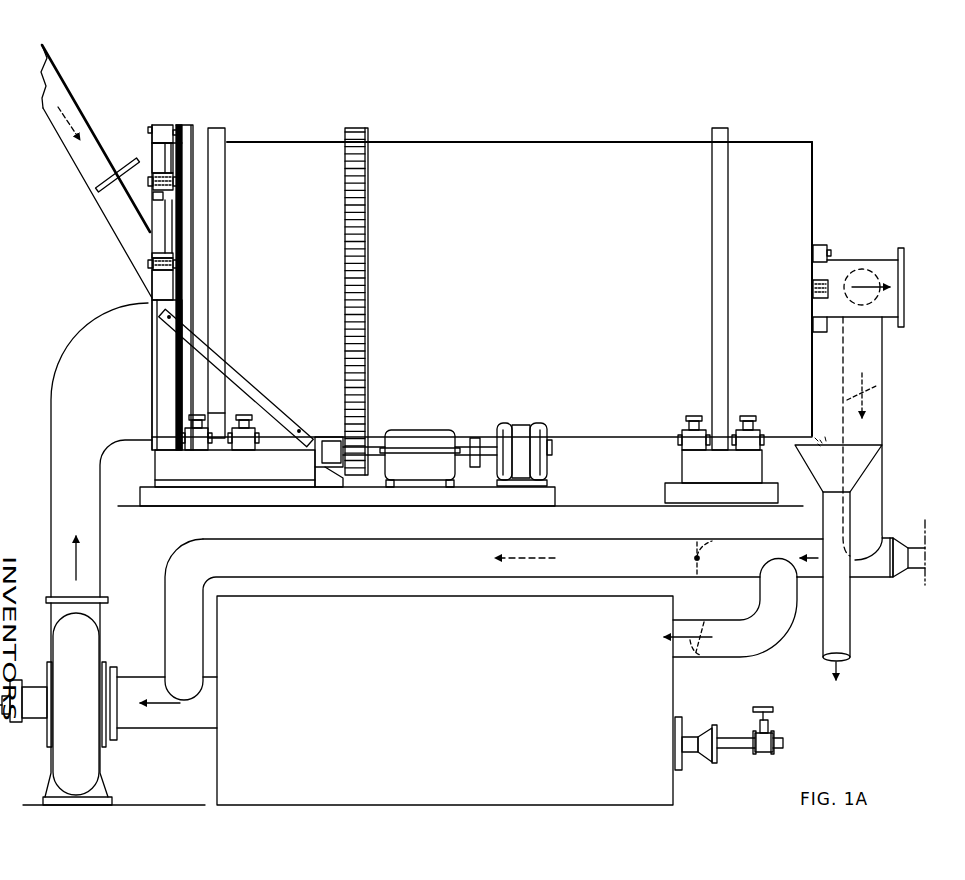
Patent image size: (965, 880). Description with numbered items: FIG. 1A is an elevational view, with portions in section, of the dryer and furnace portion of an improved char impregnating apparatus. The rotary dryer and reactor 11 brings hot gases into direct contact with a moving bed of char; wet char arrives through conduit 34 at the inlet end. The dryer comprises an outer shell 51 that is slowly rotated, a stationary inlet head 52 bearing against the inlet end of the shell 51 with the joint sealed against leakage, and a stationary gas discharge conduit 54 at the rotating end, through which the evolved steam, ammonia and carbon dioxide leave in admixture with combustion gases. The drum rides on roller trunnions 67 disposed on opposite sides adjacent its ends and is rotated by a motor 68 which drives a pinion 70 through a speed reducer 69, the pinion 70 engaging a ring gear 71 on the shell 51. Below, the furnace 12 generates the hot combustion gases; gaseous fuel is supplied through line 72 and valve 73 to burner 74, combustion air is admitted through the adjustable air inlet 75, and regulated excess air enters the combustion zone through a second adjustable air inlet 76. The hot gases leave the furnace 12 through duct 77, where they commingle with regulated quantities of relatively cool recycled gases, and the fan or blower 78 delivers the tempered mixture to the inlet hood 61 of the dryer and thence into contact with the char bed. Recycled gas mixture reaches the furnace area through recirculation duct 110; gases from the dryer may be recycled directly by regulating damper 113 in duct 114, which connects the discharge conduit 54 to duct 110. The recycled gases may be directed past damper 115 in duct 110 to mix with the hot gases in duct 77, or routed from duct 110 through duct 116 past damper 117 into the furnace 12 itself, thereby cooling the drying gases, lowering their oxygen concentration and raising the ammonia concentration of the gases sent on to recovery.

The rotary dryer and reactor 11 is at (427, 142).
The furnace 12 is at (682, 691).
The conduit 34 is at (55, 90).
The outer shell 51 is at (500, 150).
The stationary inlet head 52 is at (152, 160).
The stationary gas discharge conduit 54 is at (845, 263).
The inlet hood 61 is at (120, 432).
The roller trunnions 67 is at (218, 442).
The motor 68 is at (547, 452).
The speed reducer 69 is at (423, 432).
The pinion 70 is at (368, 437).
The ring gear 71 is at (368, 303).
The line 72 is at (774, 740).
The valve 73 is at (748, 736).
The burner 74 is at (685, 749).
The adjustable air inlet 75 is at (717, 755).
The adjustable air inlet 76 is at (683, 730).
The duct 77 is at (130, 682).
The fan or blower 78 is at (88, 645).
The recirculation duct 110 is at (462, 550).
The damper 113 is at (878, 388).
The duct 114 is at (877, 427).
The damper 115 is at (712, 541).
The duct 116 is at (778, 638).
The damper 117 is at (703, 657).